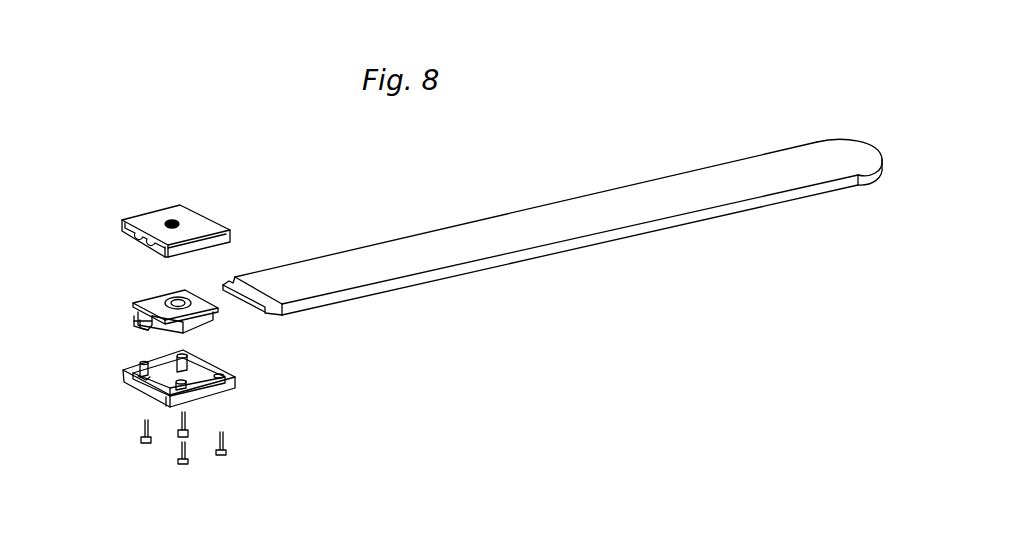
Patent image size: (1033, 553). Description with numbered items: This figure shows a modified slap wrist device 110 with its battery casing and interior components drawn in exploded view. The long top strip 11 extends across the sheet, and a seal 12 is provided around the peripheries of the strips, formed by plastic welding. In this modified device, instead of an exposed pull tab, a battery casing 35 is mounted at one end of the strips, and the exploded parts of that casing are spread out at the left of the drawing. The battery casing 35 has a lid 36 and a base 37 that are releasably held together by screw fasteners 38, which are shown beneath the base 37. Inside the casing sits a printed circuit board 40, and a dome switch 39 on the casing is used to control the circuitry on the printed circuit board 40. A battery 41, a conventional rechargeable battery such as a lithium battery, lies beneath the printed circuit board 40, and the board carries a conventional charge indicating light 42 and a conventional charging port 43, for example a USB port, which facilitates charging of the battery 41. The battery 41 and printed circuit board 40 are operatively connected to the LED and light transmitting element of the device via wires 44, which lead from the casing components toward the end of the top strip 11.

The modified slap wrist device 110 is at (752, 128).
The top strip 11 is at (517, 224).
The seal 12 is at (650, 230).
The battery casing 35 is at (100, 184).
The lid 36 is at (202, 222).
The base 37 is at (237, 382).
The screw fasteners 38 is at (186, 463).
The dome switch 39 is at (186, 297).
The printed circuit board 40 is at (150, 298).
The battery 41 is at (212, 318).
The charge indicating light 42 is at (150, 327).
The charging port 43 is at (136, 322).
The wires 44 is at (228, 294).